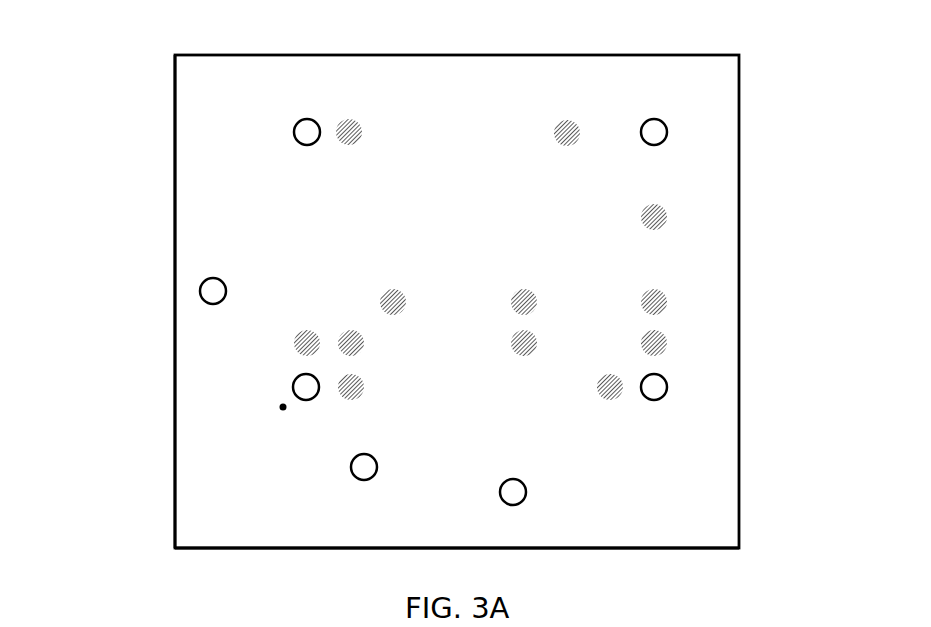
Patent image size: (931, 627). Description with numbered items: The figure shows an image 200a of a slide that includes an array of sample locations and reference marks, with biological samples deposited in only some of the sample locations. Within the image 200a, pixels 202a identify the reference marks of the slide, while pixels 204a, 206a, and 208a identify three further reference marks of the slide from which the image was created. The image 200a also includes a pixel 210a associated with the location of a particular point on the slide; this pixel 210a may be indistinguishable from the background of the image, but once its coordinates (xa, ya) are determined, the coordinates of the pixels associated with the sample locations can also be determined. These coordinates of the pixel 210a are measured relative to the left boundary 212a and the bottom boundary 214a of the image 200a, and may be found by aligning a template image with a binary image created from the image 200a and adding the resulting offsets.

The image 200a is at (739, 240).
The pixels identifying reference marks 202a is at (316, 123).
The pixels identifying reference mark 204a is at (200, 288).
The pixels identifying reference mark 206a is at (353, 478).
The pixels identifying reference mark 208a is at (527, 493).
The pixel associated with point location 210a is at (280, 409).
The left boundary 212a is at (175, 502).
The bottom boundary 214a is at (198, 548).